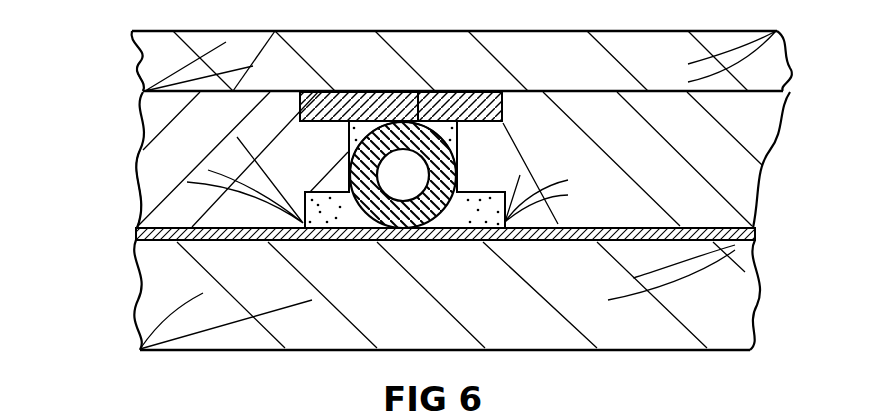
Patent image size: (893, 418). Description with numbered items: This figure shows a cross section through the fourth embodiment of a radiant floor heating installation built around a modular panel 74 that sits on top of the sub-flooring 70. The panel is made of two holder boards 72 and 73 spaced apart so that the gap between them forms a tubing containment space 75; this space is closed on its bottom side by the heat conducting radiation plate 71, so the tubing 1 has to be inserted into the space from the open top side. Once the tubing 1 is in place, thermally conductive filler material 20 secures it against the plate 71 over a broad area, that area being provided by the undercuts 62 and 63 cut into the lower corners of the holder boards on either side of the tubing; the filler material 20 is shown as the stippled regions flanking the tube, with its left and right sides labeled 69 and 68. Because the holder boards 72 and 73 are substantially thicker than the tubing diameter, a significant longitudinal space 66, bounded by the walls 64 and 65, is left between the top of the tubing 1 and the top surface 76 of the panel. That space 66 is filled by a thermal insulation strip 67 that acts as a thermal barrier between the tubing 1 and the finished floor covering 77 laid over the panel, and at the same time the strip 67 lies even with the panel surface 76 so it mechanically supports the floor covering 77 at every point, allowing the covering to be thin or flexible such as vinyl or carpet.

The tubing 1 is at (420, 100).
The filler material 20 is at (335, 214).
The undercut 62 is at (487, 240).
The undercut 63 is at (327, 217).
The wall 64 is at (483, 92).
The wall 65 is at (243, 91).
The longitudinal space 66 is at (510, 108).
The thermal insulation strip 67 is at (372, 92).
The tube wall right side 68 is at (456, 176).
The tube wall left side 69 is at (350, 172).
The sub-flooring 70 is at (172, 283).
The radiation plate 71 is at (406, 228).
The holder board 72 is at (722, 175).
The holder board 73 is at (165, 190).
The modular panel 74 is at (117, 148).
The tubing containment space 75 is at (395, 72).
The top surface 76 is at (247, 91).
The finished floor covering 77 is at (120, 50).